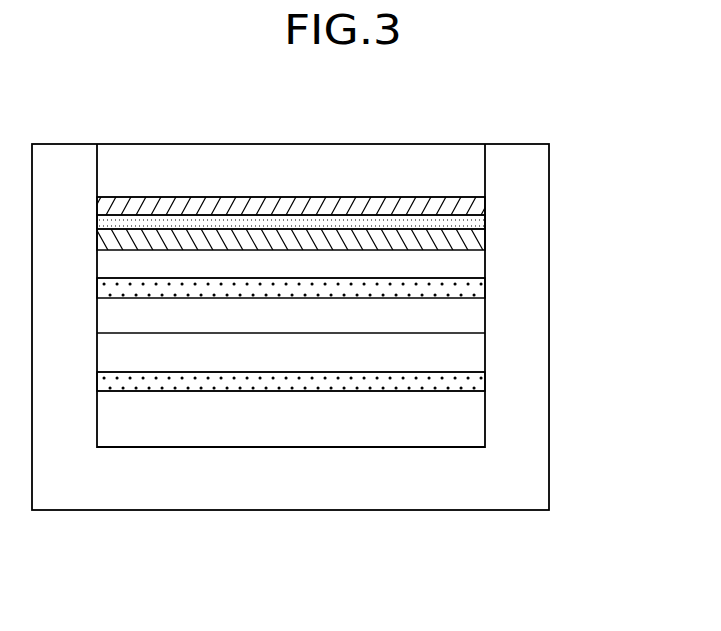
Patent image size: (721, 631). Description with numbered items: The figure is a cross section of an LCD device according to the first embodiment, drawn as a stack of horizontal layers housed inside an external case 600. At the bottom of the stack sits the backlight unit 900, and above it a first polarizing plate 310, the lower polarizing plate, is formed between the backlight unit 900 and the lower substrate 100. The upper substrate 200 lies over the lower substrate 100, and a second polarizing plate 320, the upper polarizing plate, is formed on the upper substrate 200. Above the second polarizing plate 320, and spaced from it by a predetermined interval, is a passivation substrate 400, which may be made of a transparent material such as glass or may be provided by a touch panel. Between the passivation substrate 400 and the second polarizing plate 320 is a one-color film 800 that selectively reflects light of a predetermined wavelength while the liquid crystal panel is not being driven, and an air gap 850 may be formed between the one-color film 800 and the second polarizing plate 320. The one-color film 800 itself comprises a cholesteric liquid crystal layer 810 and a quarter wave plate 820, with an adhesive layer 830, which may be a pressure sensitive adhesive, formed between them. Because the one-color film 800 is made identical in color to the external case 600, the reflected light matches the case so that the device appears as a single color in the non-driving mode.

The lower substrate 100 is at (480, 353).
The upper substrate 200 is at (480, 318).
The first polarizing plate 310 is at (480, 380).
The second polarizing plate 320 is at (480, 285).
The passivation substrate 400 is at (480, 167).
The external case 600 is at (431, 482).
The one-color film 800 is at (389, 221).
The cholesteric liquid crystal layer 810 is at (480, 200).
The quarter wave plate 820 is at (480, 237).
The adhesive layer 830 is at (480, 218).
The air gap 850 is at (480, 262).
The backlight unit 900 is at (480, 415).